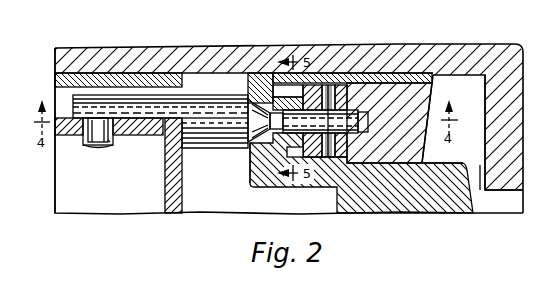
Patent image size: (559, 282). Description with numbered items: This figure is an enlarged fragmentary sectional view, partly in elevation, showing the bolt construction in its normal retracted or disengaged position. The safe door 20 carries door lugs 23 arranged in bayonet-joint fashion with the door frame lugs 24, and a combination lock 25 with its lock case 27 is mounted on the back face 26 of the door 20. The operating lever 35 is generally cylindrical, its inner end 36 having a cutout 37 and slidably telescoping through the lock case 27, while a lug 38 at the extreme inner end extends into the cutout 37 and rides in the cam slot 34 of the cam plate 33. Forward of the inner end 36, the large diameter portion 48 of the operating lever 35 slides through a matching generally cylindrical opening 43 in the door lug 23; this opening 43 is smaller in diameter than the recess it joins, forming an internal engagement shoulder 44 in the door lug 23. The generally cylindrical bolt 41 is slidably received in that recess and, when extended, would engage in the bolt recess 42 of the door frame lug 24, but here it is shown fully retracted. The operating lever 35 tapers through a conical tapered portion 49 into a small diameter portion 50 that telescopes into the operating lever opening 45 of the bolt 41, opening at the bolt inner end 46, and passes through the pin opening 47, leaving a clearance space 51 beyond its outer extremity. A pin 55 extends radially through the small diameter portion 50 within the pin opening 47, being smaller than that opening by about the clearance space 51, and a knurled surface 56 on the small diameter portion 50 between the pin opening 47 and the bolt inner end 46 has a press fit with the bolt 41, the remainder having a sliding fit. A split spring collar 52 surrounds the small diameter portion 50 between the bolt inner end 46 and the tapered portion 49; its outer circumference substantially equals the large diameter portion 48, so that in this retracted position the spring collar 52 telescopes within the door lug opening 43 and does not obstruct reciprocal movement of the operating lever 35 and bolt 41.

The safe door 20 is at (107, 62).
The door lugs 23 is at (449, 196).
The door frame lugs 24 is at (503, 182).
The combination lock 25 is at (162, 190).
The back face 26 is at (187, 70).
The lock case 27 is at (170, 178).
The cam plate 33 is at (70, 134).
The cam slot 34 is at (110, 140).
The operating lever 35 is at (224, 124).
The inner end 36 is at (124, 100).
The cutout 37 is at (148, 128).
The lug 38 is at (97, 149).
The bolt 41 is at (437, 94).
The bolt recess 42 is at (445, 160).
The opening 43 is at (246, 142).
The engagement shoulder 44 is at (284, 88).
The operating lever opening 45 is at (364, 108).
The inner end 46 is at (319, 98).
The pin opening 47 is at (352, 110).
The large diameter portion 48 is at (202, 137).
The tapered portion 49 is at (252, 108).
The small diameter portion 50 is at (282, 140).
The clearance space 51 is at (369, 122).
The split spring collar 52 is at (262, 95).
The pin 55 is at (333, 98).
The knurled surface 56 is at (343, 152).